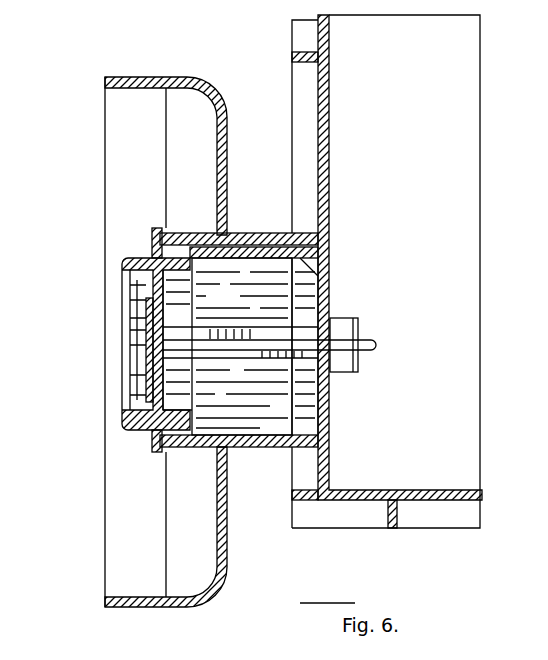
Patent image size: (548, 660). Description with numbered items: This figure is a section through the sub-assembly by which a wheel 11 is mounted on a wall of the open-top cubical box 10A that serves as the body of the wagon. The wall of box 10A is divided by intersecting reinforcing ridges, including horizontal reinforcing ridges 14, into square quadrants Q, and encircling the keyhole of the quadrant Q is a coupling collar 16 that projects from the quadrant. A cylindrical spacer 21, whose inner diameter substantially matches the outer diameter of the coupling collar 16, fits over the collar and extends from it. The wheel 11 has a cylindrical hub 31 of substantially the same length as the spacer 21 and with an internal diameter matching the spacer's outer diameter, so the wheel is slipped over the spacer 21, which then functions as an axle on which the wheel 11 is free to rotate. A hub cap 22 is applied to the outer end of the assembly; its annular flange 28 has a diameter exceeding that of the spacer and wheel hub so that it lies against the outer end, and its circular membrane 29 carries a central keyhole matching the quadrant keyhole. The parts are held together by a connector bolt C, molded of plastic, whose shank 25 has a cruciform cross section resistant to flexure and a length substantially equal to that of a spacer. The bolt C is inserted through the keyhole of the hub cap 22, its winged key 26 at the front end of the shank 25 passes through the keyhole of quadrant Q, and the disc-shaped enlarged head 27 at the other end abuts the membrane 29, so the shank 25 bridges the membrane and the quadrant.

The wheel 11 is at (228, 112).
The horizontal reinforcing ridges 14 is at (292, 53).
The square quadrant Q is at (338, 163).
The open-top cubical box 10A is at (331, 505).
The cylindrical hub 31 is at (255, 231).
The hub cap 22 is at (120, 252).
The annular flange 28 is at (156, 228).
The cylindrical spacer 21 is at (242, 258).
The coupling collar 16 is at (330, 276).
The connector bolt C is at (232, 320).
The enlarged head 27 is at (146, 363).
The shank 25 is at (241, 362).
The key 26 is at (362, 360).
The circular membrane 29 is at (197, 418).